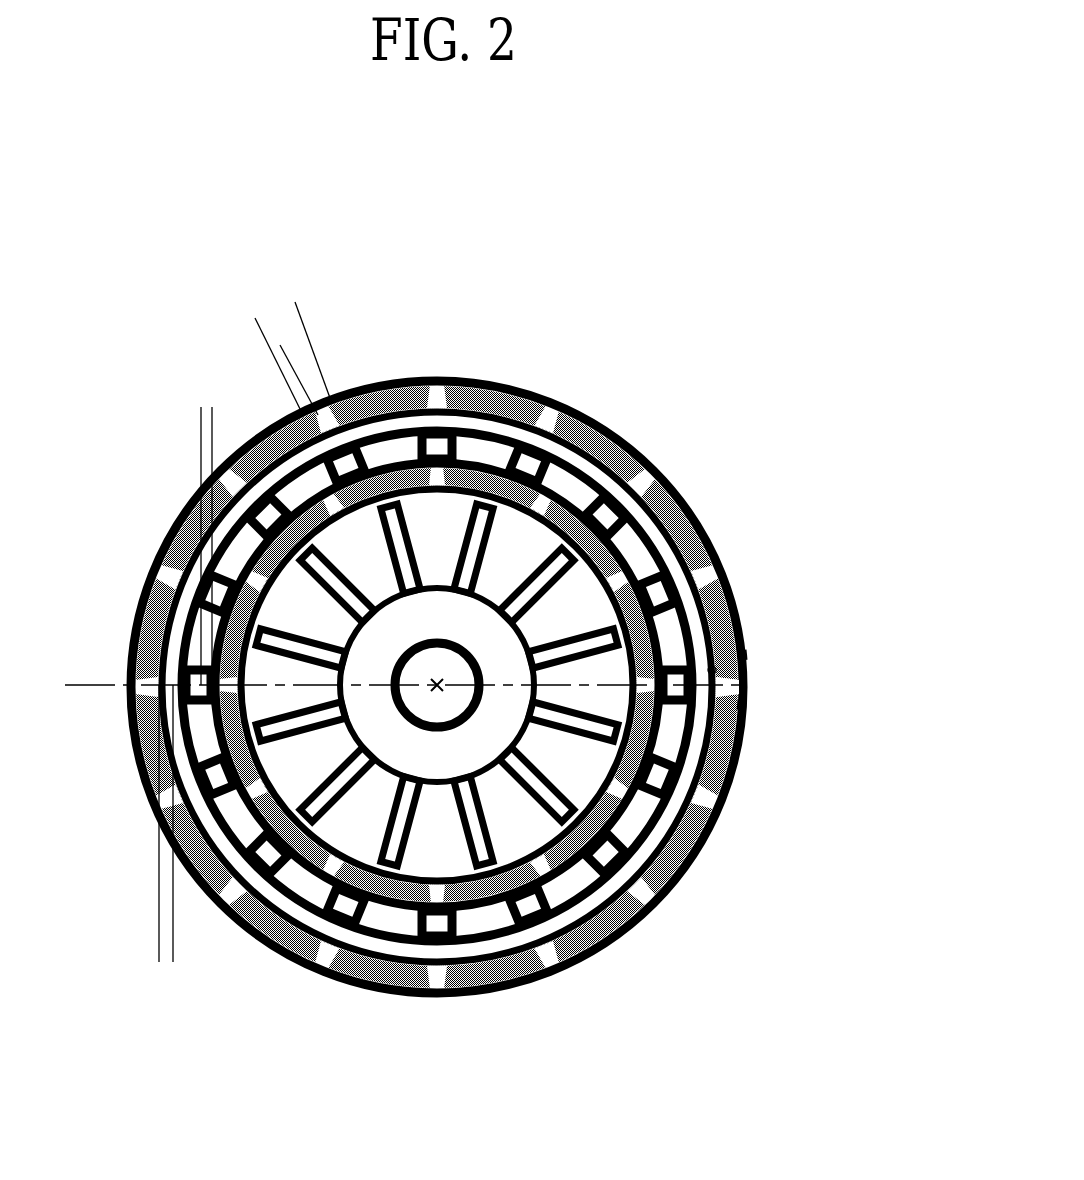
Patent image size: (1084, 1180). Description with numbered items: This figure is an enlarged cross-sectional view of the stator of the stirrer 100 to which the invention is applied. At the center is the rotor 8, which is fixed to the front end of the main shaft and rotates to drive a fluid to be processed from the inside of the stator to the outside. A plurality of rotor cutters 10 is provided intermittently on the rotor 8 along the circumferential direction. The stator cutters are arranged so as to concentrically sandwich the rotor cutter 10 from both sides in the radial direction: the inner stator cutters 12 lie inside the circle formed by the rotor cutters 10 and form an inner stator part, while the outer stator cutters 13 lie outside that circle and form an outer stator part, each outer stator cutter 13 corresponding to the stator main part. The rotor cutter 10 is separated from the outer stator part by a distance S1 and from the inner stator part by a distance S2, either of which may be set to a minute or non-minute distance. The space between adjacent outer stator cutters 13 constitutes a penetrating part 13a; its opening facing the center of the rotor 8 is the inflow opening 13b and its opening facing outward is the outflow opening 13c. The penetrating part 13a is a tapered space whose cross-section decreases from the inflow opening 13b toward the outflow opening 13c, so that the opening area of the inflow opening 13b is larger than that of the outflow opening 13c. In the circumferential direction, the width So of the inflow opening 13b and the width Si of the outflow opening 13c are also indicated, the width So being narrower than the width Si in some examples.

The stirrer 100 is at (501, 621).
The rotor 8 is at (623, 440).
The rotor cutter 10 is at (473, 617).
The inner stator cutter 12 is at (693, 507).
The outer stator cutter 13 is at (747, 630).
The penetrating part 13a is at (750, 707).
The inflow opening 13b is at (750, 647).
The outflow opening 13c is at (745, 685).
The distance S1 is at (232, 418).
The distance S2 is at (194, 950).
The width of the outflow opening Si is at (242, 327).
The width of the inflow opening So is at (277, 352).